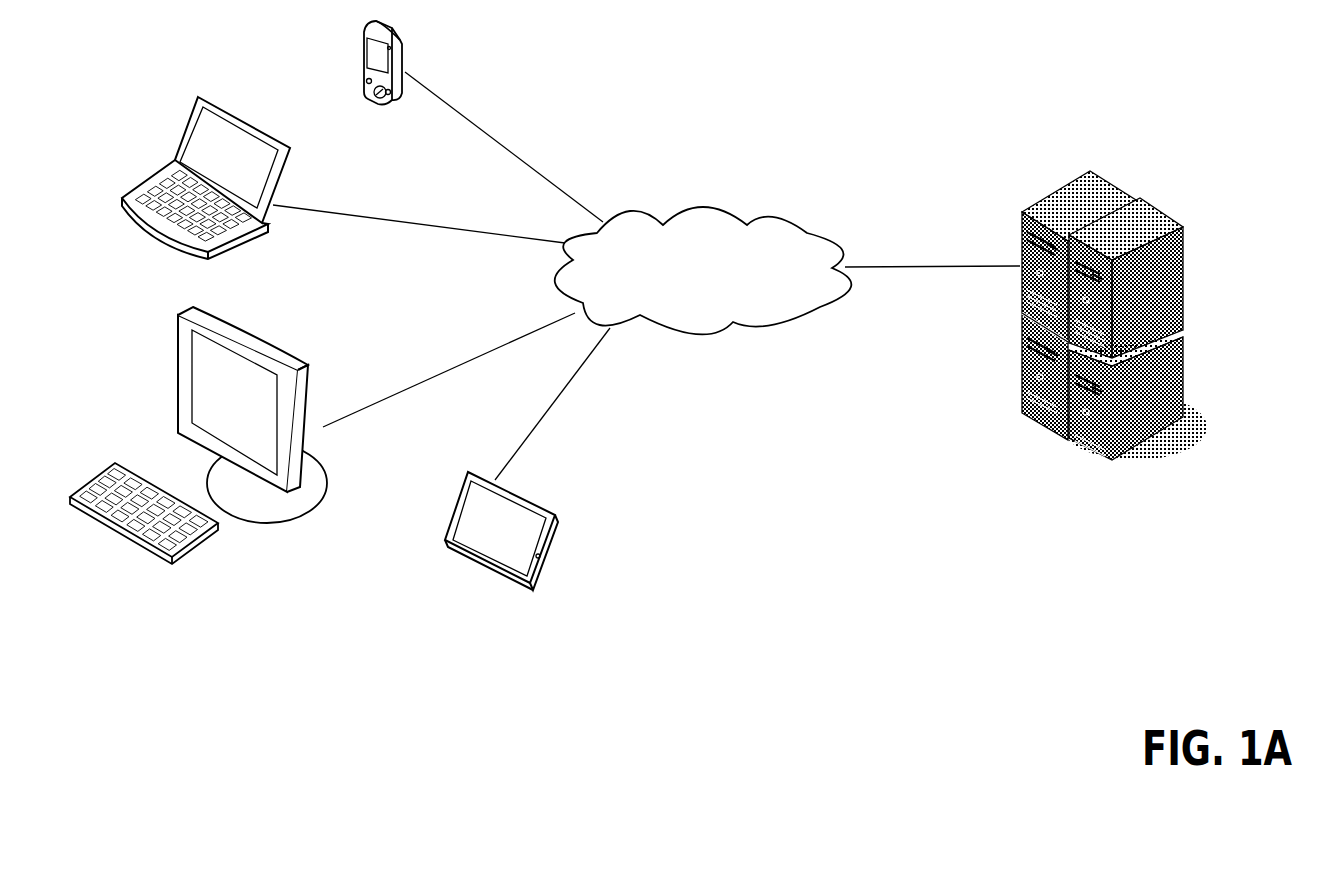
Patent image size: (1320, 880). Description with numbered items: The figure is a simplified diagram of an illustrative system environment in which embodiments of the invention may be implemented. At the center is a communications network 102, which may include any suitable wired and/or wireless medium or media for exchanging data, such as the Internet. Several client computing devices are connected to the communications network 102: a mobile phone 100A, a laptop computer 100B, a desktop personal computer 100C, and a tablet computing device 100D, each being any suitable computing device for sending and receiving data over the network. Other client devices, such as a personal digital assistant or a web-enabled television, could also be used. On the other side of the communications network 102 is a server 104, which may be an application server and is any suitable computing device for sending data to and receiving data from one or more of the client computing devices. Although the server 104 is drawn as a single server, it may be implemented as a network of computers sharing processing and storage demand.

The mobile phone 100A is at (405, 50).
The laptop computer 100B is at (285, 163).
The desktop personal computer 100C is at (302, 373).
The tablet computing device 100D is at (558, 533).
The communications network 102 is at (720, 280).
The server 104 is at (1176, 246).